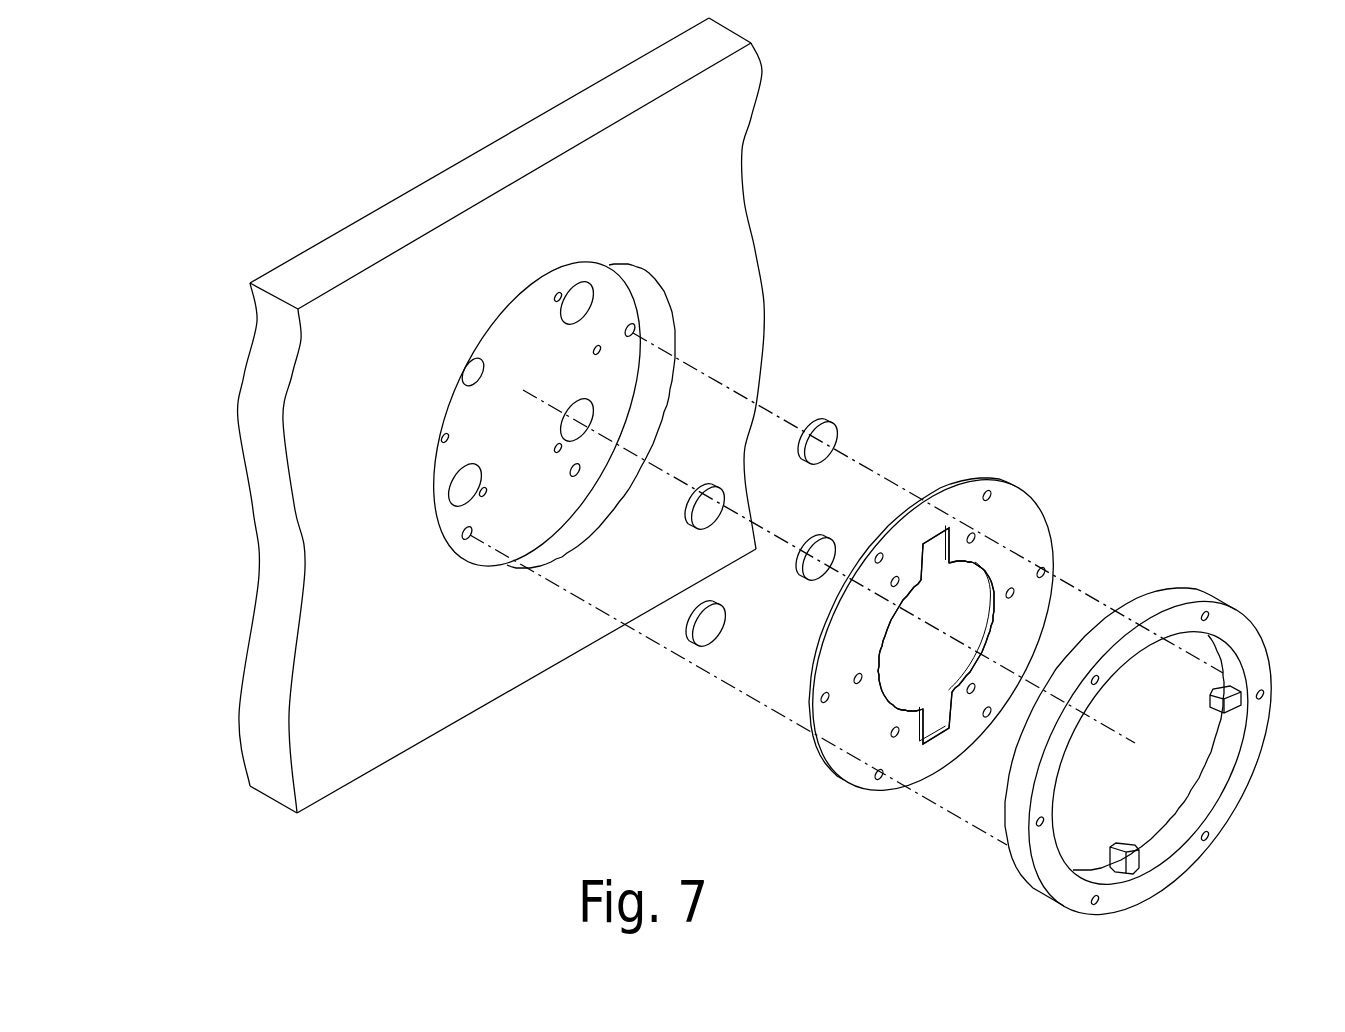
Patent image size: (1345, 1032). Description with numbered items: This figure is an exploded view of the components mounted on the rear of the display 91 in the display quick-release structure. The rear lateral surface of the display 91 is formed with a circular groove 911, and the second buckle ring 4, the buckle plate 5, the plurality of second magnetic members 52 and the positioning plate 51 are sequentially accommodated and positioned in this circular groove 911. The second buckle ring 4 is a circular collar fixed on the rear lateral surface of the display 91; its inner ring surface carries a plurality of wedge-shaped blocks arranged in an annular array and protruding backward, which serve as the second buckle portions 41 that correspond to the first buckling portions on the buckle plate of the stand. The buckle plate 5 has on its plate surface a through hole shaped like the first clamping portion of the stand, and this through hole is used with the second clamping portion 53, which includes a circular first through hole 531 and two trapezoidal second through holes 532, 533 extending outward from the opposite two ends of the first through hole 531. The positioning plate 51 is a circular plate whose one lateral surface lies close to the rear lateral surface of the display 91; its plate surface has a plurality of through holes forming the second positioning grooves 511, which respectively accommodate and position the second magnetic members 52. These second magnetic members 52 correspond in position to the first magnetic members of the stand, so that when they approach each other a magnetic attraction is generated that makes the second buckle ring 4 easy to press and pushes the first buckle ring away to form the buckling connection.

The second buckle ring 4 is at (1153, 741).
The second buckle portion 41 is at (1237, 688).
The buckle plate 5 is at (910, 658).
The positioning plate 51 is at (593, 273).
The second positioning groove 511 is at (580, 303).
The second magnetic member 52 is at (830, 422).
The second clamping portion 53 is at (853, 703).
The first through hole 531 is at (900, 670).
The second through hole 532 is at (923, 556).
The second through hole 533 is at (933, 730).
The display 91 is at (320, 448).
The circular groove 911 is at (658, 322).